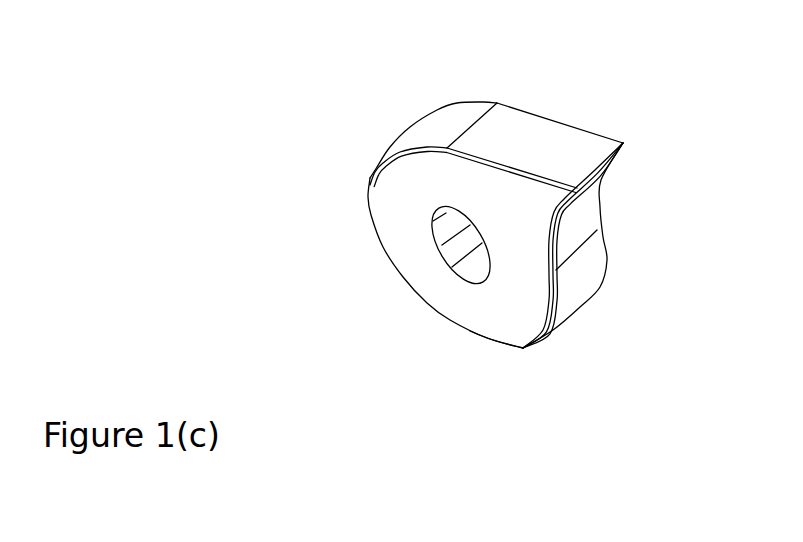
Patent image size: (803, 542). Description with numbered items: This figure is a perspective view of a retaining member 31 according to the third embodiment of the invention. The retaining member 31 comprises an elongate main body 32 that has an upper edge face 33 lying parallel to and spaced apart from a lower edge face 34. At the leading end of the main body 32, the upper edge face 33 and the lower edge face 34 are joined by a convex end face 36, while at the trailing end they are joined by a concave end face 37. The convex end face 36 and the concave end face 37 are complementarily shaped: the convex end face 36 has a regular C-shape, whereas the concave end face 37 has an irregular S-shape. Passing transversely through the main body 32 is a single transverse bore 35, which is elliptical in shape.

The retaining member 31 is at (536, 105).
The elongate main body 32 is at (472, 295).
The upper edge face 33 is at (560, 152).
The lower edge face 34 is at (493, 343).
The transverse bore 35 is at (453, 255).
The convex end face 36 is at (366, 220).
The concave end face 37 is at (577, 218).